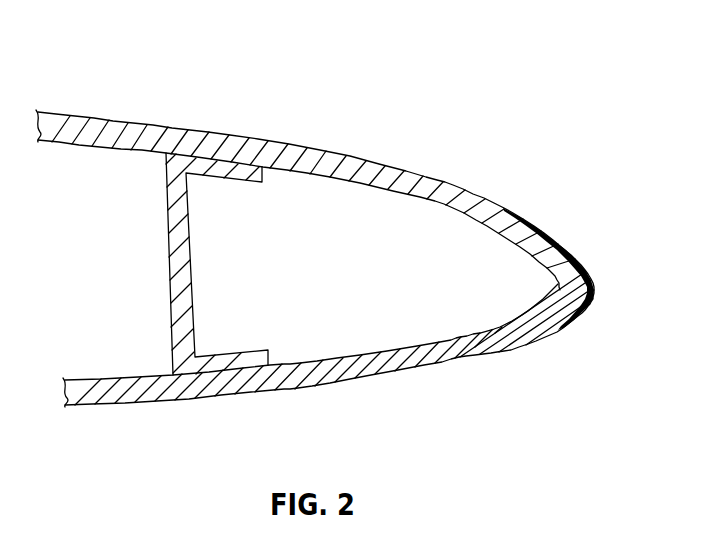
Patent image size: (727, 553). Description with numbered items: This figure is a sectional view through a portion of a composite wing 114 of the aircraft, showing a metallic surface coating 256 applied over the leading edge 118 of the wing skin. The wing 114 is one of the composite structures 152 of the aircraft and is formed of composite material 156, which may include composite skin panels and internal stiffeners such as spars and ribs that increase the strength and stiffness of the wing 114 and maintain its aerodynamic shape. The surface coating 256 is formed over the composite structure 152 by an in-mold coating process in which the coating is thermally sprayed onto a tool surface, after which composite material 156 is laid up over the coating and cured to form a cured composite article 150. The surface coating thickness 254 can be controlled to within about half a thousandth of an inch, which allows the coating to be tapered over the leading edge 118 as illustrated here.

The wing 114 is at (315, 172).
The cured composite article 150 is at (332, 152).
The composite structure 152 is at (383, 375).
The composite material 156 is at (260, 392).
The leading edge 118 is at (573, 296).
The surface coating thickness 254 is at (563, 240).
The surface coating 256 is at (560, 325).